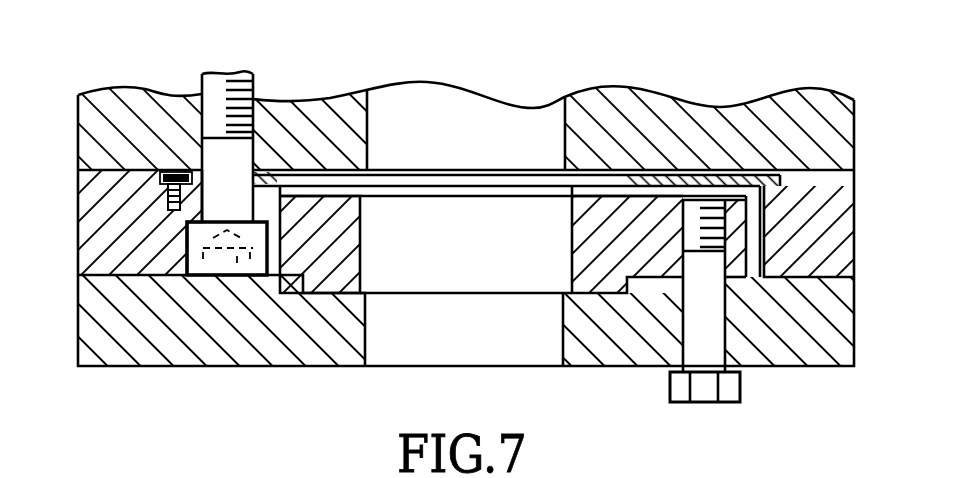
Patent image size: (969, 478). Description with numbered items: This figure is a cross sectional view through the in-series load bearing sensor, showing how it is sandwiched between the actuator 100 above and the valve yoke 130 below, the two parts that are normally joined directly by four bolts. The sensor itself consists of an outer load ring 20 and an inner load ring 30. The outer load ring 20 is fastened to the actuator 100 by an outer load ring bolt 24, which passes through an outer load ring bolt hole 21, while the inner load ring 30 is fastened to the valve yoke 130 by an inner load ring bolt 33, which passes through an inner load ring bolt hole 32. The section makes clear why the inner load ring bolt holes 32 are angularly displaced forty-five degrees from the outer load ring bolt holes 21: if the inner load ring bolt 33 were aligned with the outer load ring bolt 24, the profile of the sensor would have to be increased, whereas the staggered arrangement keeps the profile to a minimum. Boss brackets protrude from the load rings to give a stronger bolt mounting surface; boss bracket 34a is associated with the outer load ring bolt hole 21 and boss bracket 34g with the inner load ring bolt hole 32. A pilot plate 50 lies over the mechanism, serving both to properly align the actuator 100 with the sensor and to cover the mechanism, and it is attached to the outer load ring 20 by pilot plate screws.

The actuator 100 is at (318, 99).
The outer load ring 20 is at (77, 228).
The outer load ring bolt hole 21 is at (187, 257).
The outer load ring bolt 24 is at (240, 268).
The inner load ring 30 is at (329, 288).
The inner load ring bolt hole 32 is at (692, 230).
The inner load ring bolt 33 is at (690, 297).
The boss bracket 34a is at (267, 167).
The boss bracket 34g is at (740, 277).
The pilot plate 50 is at (707, 168).
The valve yoke 130 is at (330, 367).